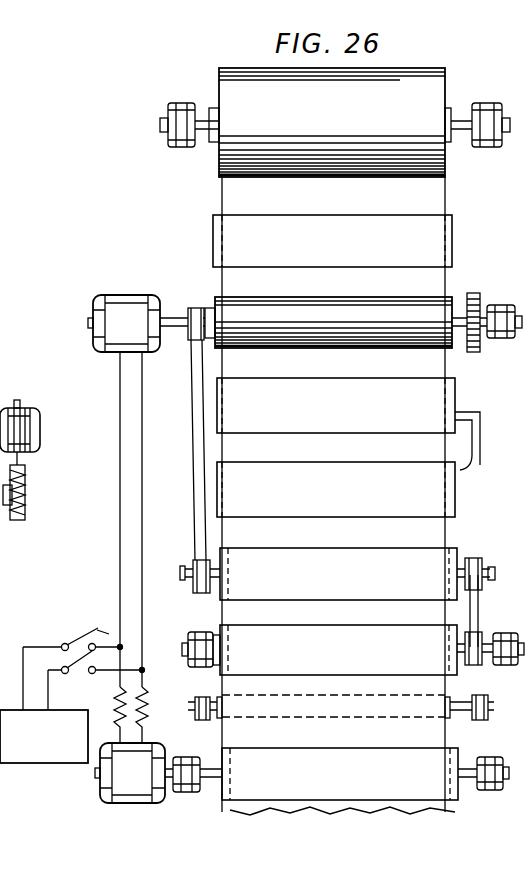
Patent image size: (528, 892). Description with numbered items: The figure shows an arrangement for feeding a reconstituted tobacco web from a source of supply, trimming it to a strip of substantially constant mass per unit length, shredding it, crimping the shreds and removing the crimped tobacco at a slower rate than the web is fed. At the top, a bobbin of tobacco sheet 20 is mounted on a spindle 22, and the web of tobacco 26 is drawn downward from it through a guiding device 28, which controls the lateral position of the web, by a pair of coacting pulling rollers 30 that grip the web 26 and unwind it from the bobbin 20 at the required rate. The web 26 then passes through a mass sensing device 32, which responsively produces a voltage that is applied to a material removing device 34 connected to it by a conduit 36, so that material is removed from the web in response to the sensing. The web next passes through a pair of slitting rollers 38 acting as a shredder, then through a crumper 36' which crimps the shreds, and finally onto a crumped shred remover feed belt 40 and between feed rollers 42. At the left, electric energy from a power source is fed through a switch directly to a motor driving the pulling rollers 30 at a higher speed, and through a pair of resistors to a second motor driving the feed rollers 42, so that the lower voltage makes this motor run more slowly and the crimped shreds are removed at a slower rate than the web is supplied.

The bobbin of tobacco sheet 20 is at (435, 80).
The spindle 22 is at (461, 115).
The web of tobacco 26 is at (432, 190).
The guiding device 28 is at (440, 230).
The pulling rollers 30 is at (443, 310).
The mass sensing device 32 is at (443, 390).
The material removing device 34 is at (443, 496).
The connecting conduit 36 is at (466, 442).
The crumper 36' is at (353, 635).
The slitting rollers 38 is at (443, 558).
The crumped shred remover feed belt 40 is at (447, 731).
The feed rollers 42 is at (443, 787).